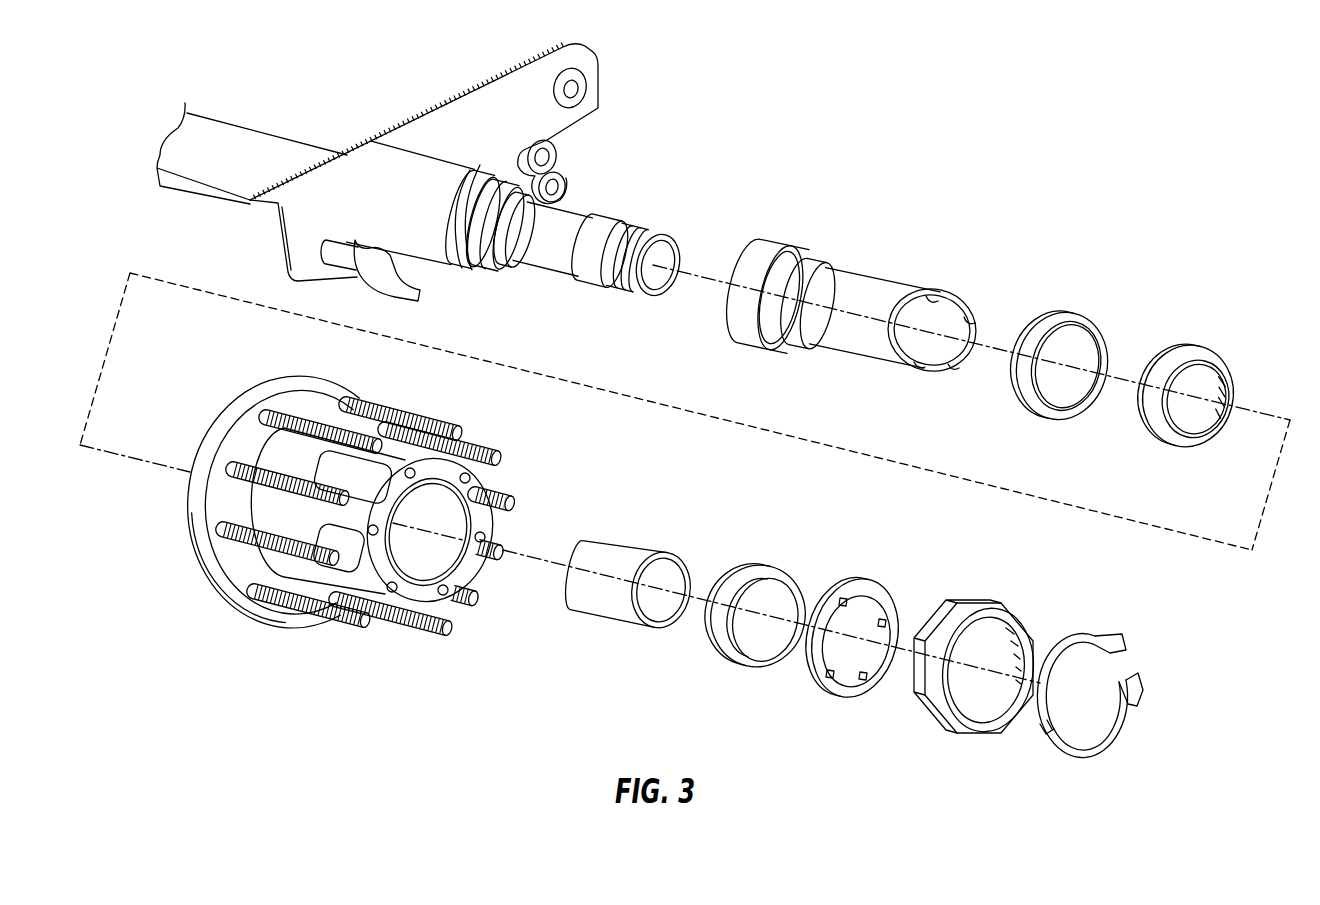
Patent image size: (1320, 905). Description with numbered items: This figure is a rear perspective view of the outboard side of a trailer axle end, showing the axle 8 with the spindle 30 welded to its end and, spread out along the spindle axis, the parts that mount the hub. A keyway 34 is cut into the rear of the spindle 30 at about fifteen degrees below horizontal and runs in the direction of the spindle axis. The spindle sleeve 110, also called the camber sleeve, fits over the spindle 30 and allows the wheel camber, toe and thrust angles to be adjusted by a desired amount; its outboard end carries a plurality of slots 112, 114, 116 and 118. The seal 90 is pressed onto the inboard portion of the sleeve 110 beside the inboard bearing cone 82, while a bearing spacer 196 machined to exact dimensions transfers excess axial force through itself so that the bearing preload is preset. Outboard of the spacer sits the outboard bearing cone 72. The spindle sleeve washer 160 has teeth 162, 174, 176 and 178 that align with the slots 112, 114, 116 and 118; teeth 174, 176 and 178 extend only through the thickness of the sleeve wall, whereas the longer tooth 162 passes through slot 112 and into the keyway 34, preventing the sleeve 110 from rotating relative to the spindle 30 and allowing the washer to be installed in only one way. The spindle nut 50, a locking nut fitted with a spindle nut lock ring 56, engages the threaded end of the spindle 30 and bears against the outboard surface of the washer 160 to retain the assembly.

The axle beam 8 is at (252, 142).
The spindle 30 is at (612, 228).
The keyway 34 is at (642, 297).
The spindle sleeve 110 is at (862, 290).
The slot 112 is at (920, 376).
The slot 114 is at (976, 322).
The slot 116 is at (933, 298).
The slot 118 is at (958, 370).
The seal 90 is at (1063, 312).
The bearing cone 82 is at (1187, 352).
The bearing spacer 196 is at (620, 553).
The outboard bearing cone 72 is at (748, 570).
The spindle sleeve washer 160 is at (838, 697).
The tooth 162 is at (828, 676).
The tooth 174 is at (893, 624).
The tooth 176 is at (842, 598).
The tooth 178 is at (868, 680).
The spindle nut 50 is at (985, 600).
The spindle nut lock ring 56 is at (1105, 638).